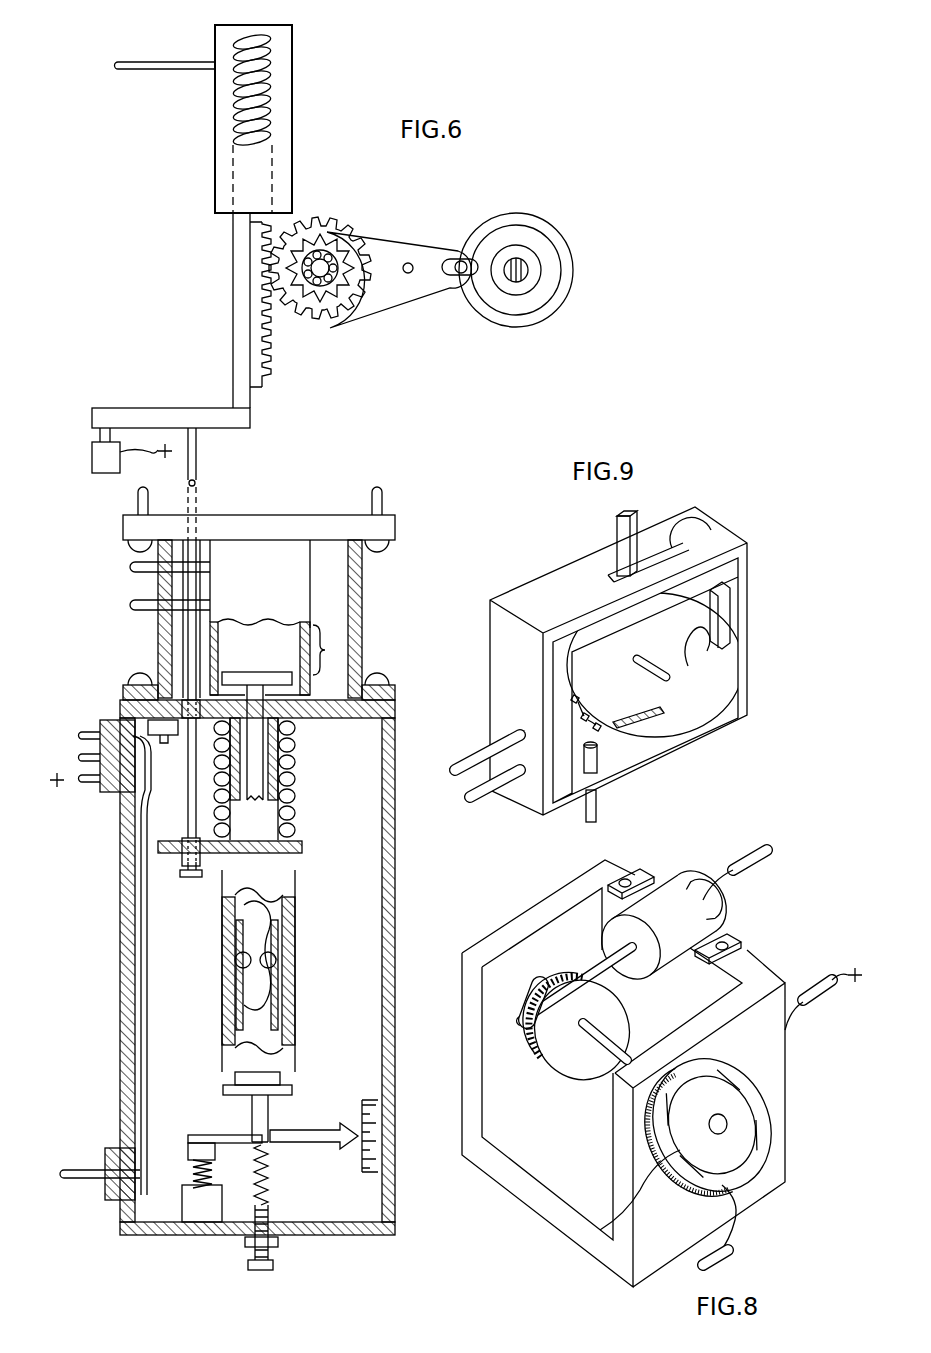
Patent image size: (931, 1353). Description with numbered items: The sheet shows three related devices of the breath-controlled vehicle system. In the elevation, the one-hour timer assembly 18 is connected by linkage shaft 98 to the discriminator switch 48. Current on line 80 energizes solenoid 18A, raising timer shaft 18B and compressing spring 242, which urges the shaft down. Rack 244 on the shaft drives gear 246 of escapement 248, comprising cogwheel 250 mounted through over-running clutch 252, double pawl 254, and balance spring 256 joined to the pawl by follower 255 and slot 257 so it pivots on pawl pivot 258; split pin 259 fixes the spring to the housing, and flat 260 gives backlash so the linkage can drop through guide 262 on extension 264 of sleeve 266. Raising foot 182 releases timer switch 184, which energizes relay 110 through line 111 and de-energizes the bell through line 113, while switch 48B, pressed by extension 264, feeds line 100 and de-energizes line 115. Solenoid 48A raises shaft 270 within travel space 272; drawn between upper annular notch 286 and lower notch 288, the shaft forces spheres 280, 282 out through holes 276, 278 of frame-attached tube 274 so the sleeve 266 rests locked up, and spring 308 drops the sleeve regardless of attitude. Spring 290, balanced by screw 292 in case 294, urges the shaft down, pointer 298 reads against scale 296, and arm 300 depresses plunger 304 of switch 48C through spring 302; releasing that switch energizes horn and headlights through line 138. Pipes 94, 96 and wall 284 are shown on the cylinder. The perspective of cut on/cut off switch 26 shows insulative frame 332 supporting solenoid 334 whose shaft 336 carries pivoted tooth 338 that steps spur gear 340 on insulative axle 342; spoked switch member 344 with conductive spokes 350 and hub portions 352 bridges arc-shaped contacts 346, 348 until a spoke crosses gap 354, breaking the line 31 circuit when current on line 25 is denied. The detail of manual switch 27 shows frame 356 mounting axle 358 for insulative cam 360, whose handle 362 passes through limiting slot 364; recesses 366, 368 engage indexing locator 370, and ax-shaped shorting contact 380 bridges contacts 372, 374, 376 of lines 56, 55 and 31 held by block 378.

In FIG. 6, the one-hour timer assembly 18 is at (321, 197).
In FIG. 6, the solenoid 18A is at (292, 70).
In FIG. 6, the timer shaft 18B is at (233, 270).
In FIG. 6, the line 80 is at (138, 70).
In FIG. 6, the spring 242 is at (237, 104).
In FIG. 6, the rack 244 is at (275, 332).
In FIG. 6, the gear 246 is at (333, 212).
In FIG. 6, the escapement 248 is at (388, 308).
In FIG. 6, the cogwheel 250 is at (340, 238).
In FIG. 6, the over-running clutch 252 is at (342, 250).
In FIG. 6, the double pawl 254 is at (324, 318).
In FIG. 6, the follower 255 is at (472, 260).
In FIG. 6, the balance spring 256 is at (573, 272).
In FIG. 6, the slot 257 is at (442, 278).
In FIG. 6, the pawl pivot 258 is at (411, 274).
In FIG. 6, the split pin 259 is at (526, 265).
In FIG. 6, the flat 260 is at (272, 366).
In FIG. 6, the foot 182 is at (118, 410).
In FIG. 6, the one-hour timer switch 184 is at (103, 474).
In FIG. 6, the relay 110 is at (35, 466).
In FIG. 6, the line 111 is at (92, 456).
In FIG. 6, the line 113 is at (92, 467).
In FIG. 6, the linkage shaft 98 is at (198, 452).
In FIG. 6, the solenoid 48A is at (300, 572).
In FIG. 6, the inlet pipe 94 is at (132, 568).
In FIG. 6, the outlet pipe 96 is at (132, 605).
In FIG. 6, the shaft 270 is at (262, 690).
In FIG. 6, the travel space 272 is at (326, 650).
In FIG. 6, the case 294 is at (393, 897).
In FIG. 6, the switch 48B is at (178, 742).
In FIG. 6, the line 100 is at (88, 730).
In FIG. 6, the line 115 is at (80, 757).
In FIG. 6, the spring 308 is at (293, 768).
In FIG. 6, the frame-attached tube 274 is at (284, 822).
In FIG. 6, the extension 264 is at (180, 856).
In FIG. 6, the guide 262 is at (205, 866).
In FIG. 6, the sleeve 266 is at (222, 985).
In FIG. 6, the hole 276 is at (236, 958).
In FIG. 6, the hole 278 is at (281, 950).
In FIG. 6, the sphere 280 is at (276, 962).
In FIG. 6, the sphere 282 is at (235, 962).
In FIG. 6, the cylinder wall 284 is at (280, 1000).
In FIG. 6, the upper annular notch 286 is at (268, 948).
In FIG. 6, the lower notch 288 is at (240, 1010).
In FIG. 6, the discriminator switch 48 is at (82, 982).
In FIG. 6, the arm 300 is at (200, 1135).
In FIG. 6, the spring 302 is at (185, 1195).
In FIG. 6, the plunger 304 is at (200, 1222).
In FIG. 6, the switch 48C is at (165, 1235).
In FIG. 6, the line 138 is at (62, 1174).
In FIG. 6, the scale 296 is at (368, 1100).
In FIG. 6, the pointer 298 is at (340, 1142).
In FIG. 6, the spring 290 is at (268, 1160).
In FIG. 6, the screw 292 is at (280, 1248).
In FIG. 9, the frame 356 is at (750, 630).
In FIG. 9, the cam handle 362 is at (635, 512).
In FIG. 9, the limiting slot 364 is at (662, 540).
In FIG. 9, the insulative cam 360 is at (598, 652).
In FIG. 9, the contact 372 is at (590, 636).
In FIG. 9, the cam recess 368 is at (646, 658).
In FIG. 9, the cam recess 366 is at (730, 600).
In FIG. 9, the indexing locator 370 is at (708, 660).
In FIG. 9, the contact 374 is at (582, 720).
In FIG. 9, the contact 376 is at (600, 760).
In FIG. 9, the cam shorting-contact 380 is at (660, 722).
In FIG. 9, the block 378 is at (640, 735).
In FIG. 9, the axle 358 is at (700, 692).
In FIG. 9, the manual switch 27 is at (716, 760).
In FIG. 9, the line 56 is at (453, 772).
In FIG. 9, the line 55 is at (470, 799).
In FIG. 9, the line 31 is at (594, 815).
In FIG. 8, the line 31 is at (724, 1263).
In FIG. 8, the insulative frame 332 is at (512, 1183).
In FIG. 8, the solenoid 334 is at (722, 905).
In FIG. 8, the line 25 is at (767, 850).
In FIG. 8, the solenoid shaft 336 is at (598, 980).
In FIG. 8, the insulative axle 342 is at (534, 985).
In FIG. 8, the spur gear 340 is at (610, 1005).
In FIG. 8, the pivoted tooth 338 is at (548, 1040).
In FIG. 8, the spoked switch member 344 is at (765, 1130).
In FIG. 8, the spokes 350 is at (740, 1165).
In FIG. 8, the hub portions 352 is at (730, 1103).
In FIG. 8, the arc-shaped contact 348 is at (742, 1188).
In FIG. 8, the arc-shaped contact 346 is at (612, 1225).
In FIG. 8, the gap 354 is at (642, 1252).
In FIG. 8, the cut on/cut off switch 26 is at (846, 1049).